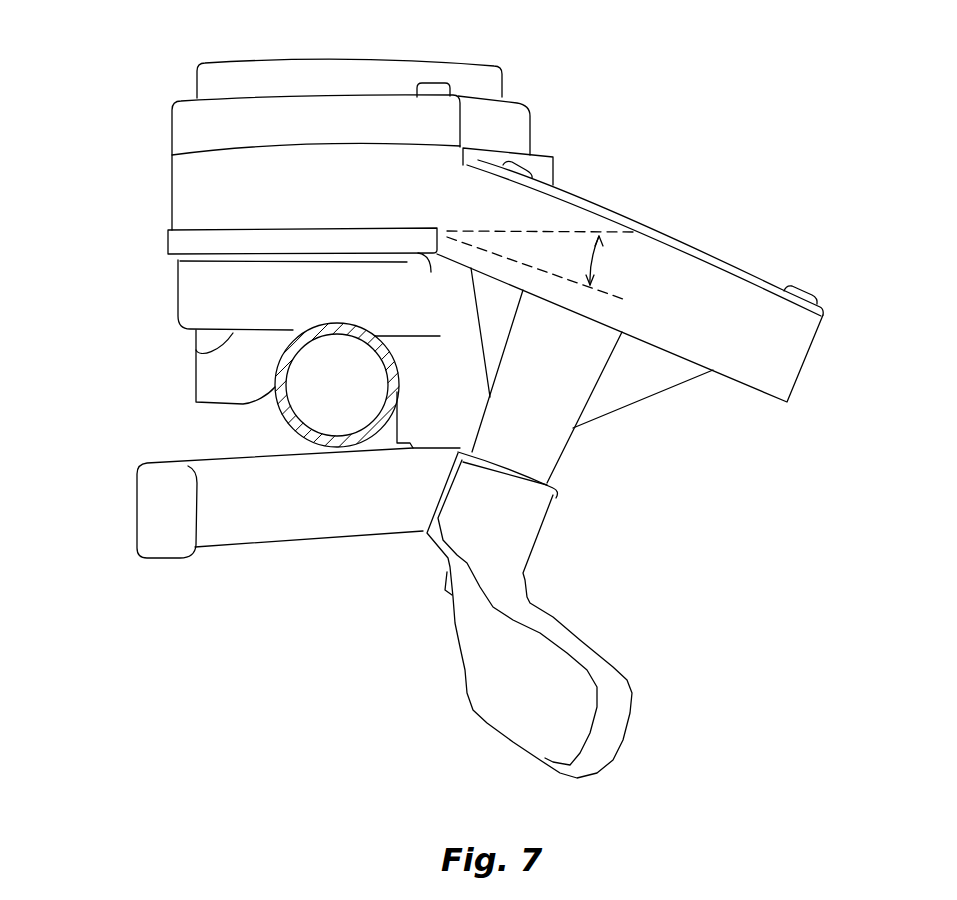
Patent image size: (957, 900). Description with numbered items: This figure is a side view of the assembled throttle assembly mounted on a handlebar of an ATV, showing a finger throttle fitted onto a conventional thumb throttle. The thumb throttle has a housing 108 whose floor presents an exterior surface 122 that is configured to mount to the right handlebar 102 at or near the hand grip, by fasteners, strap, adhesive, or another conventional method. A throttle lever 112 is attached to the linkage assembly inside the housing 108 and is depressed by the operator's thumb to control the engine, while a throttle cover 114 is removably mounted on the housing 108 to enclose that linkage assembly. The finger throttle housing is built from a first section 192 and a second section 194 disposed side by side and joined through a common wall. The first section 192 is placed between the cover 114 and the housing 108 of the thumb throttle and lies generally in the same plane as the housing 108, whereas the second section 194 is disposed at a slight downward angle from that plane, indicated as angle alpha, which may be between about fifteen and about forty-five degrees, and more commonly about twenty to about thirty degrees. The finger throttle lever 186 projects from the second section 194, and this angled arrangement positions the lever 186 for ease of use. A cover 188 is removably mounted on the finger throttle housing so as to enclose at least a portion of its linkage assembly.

The right handlebar 102 is at (284, 425).
The housing 108 is at (187, 291).
The throttle lever 112 is at (158, 527).
The throttle cover 114 is at (270, 58).
The exterior surface 122 is at (196, 350).
The throttle lever 186 is at (618, 693).
The cover 188 is at (722, 252).
The first section 192 is at (197, 191).
The second section 194 is at (780, 358).